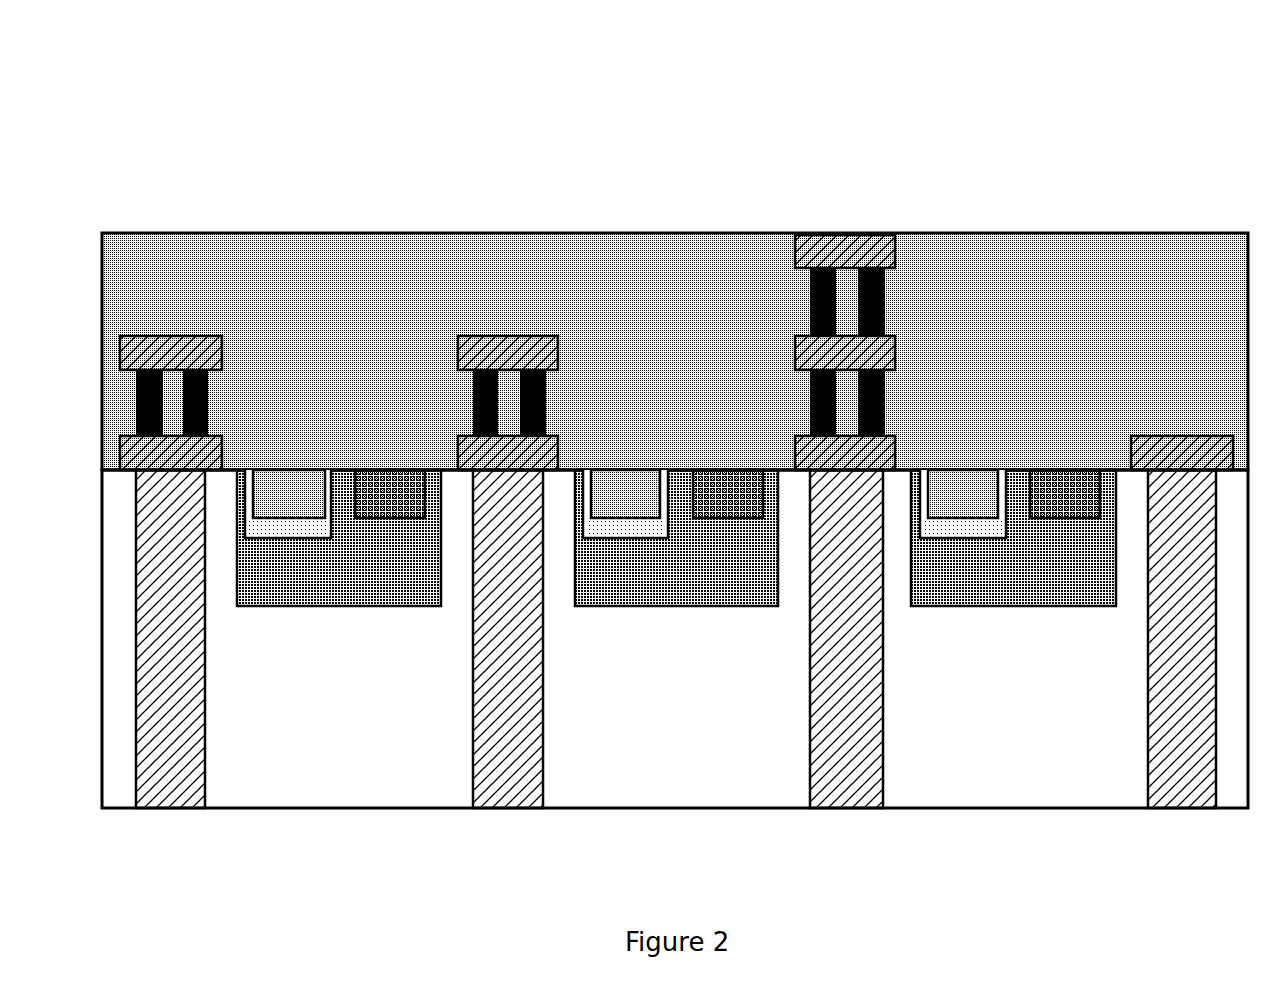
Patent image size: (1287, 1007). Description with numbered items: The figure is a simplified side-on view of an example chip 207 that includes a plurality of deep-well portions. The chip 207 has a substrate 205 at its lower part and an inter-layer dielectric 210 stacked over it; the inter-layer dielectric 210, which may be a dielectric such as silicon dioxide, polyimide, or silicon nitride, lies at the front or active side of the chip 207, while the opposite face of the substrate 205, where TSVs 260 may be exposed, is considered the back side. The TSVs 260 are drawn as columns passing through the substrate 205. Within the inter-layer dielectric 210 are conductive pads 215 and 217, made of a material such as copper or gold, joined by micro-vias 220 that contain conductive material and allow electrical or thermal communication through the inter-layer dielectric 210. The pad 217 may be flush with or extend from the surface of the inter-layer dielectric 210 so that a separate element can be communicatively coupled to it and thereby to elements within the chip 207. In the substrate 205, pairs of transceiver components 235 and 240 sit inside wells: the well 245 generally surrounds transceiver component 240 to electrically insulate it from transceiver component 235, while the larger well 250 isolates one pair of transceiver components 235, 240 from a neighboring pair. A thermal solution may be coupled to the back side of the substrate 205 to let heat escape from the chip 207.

The substrate 205 is at (1057, 783).
The chip 207 is at (675, 472).
The inter-layer dielectric 210 is at (310, 242).
The pad 215 is at (483, 347).
The pad 217 is at (863, 243).
The micro-vias 220 is at (802, 297).
The transceiver component 235 is at (718, 488).
The transceiver component 240 is at (618, 480).
The well 245 is at (948, 520).
The well 250 is at (263, 563).
The TSVs 260 is at (163, 785).